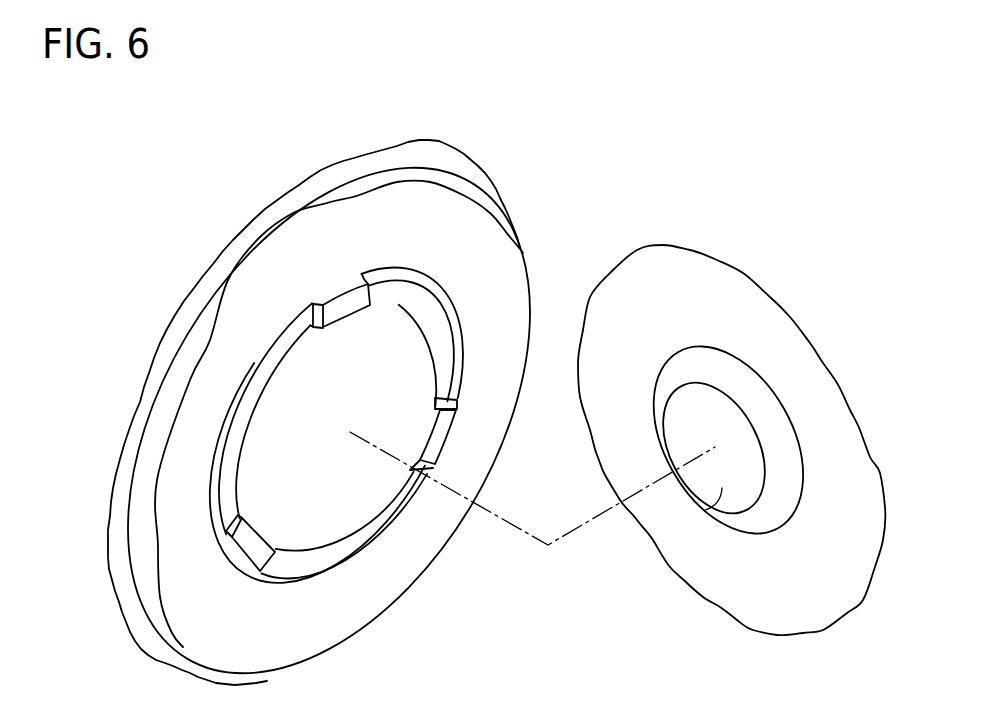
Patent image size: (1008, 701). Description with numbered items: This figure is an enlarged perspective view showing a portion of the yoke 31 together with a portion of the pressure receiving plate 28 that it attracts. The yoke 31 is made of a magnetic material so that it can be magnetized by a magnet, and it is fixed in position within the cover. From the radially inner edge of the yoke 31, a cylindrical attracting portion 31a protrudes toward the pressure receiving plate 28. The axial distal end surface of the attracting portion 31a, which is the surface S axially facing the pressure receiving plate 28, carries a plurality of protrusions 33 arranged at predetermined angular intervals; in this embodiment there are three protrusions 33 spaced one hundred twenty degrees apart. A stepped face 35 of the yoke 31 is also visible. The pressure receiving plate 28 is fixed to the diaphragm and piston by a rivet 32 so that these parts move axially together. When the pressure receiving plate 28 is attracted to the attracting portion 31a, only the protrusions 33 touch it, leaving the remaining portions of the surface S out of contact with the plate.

The yoke 31 is at (440, 160).
The cylindrical attracting portion 31a is at (375, 522).
The protrusions 33 is at (340, 308).
The stepped face of ring member 35 is at (478, 227).
The surface S is at (322, 553).
The rivet 32 is at (721, 488).
The pressure receiving plate 28 is at (720, 582).